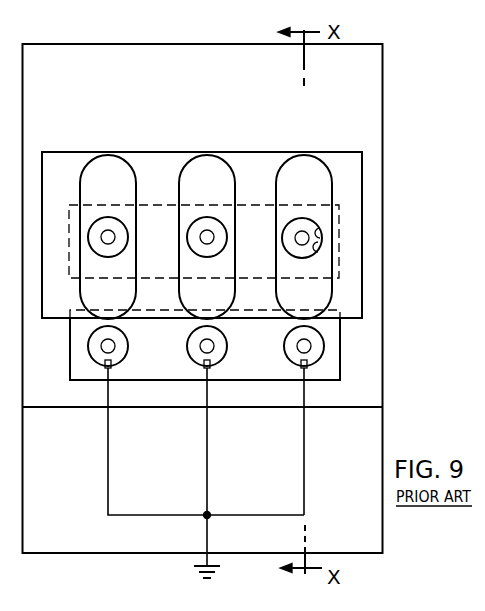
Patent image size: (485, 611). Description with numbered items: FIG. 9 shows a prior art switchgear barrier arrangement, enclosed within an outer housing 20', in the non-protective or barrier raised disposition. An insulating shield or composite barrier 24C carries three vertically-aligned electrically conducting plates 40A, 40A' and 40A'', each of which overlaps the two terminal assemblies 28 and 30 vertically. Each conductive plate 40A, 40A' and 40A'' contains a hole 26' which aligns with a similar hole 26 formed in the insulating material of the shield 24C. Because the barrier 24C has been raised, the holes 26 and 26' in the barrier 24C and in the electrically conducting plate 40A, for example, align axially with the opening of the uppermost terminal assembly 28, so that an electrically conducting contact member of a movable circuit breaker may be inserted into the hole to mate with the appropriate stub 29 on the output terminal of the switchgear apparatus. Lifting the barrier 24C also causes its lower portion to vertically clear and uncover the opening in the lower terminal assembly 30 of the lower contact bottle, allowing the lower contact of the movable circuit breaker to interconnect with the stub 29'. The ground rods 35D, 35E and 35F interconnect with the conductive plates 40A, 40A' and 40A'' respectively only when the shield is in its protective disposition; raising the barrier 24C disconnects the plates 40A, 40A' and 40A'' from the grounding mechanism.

The housing 20' is at (220, 298).
The insulating shield 24C is at (336, 152).
The hole 26 is at (362, 224).
The hole 26' is at (363, 255).
The terminal assembly 28 is at (297, 218).
The stub 29 is at (301, 270).
The stub 29' is at (279, 355).
The terminal assembly 30 is at (303, 372).
The ground rod 35D is at (304, 470).
The ground rod 35E is at (206, 470).
The ground rod 35F is at (108, 470).
The electrically conducting plate 40A is at (224, 341).
The electrically conducting plate 40A' is at (229, 237).
The electrically conducting plate 40A'' is at (133, 237).